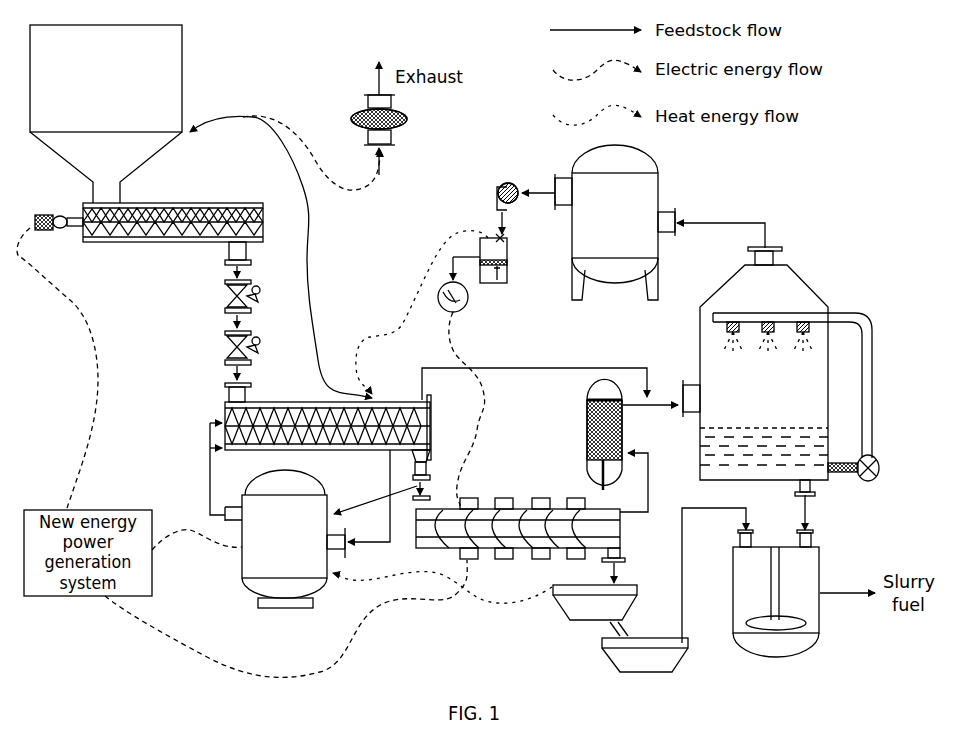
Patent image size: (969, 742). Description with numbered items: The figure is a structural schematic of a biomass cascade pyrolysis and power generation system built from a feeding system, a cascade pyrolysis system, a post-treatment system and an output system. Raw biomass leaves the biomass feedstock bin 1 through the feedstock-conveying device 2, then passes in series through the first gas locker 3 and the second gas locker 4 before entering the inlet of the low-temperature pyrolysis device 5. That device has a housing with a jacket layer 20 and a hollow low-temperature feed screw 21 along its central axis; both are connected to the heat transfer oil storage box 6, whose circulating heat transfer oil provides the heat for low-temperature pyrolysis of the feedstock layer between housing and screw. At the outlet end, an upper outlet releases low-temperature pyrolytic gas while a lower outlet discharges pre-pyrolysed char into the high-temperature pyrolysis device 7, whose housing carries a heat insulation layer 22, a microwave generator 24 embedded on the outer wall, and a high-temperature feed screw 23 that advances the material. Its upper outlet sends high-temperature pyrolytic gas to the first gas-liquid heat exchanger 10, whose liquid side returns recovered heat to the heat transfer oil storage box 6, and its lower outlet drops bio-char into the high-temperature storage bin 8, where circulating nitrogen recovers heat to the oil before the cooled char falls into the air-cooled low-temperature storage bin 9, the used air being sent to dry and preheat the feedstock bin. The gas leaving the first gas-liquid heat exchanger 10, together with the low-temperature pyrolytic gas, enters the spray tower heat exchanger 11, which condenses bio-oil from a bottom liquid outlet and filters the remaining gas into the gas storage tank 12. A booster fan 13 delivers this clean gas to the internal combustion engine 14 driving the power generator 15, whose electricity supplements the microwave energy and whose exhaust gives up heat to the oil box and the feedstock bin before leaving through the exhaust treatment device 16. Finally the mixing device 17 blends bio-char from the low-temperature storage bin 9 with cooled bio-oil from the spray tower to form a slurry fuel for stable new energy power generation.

The biomass feedstock bin 1 is at (162, 85).
The feedstock-conveying device 2 is at (182, 243).
The first gas locker 3 is at (230, 312).
The second gas locker 4 is at (223, 375).
The low-temperature pyrolysis device 5 is at (263, 403).
The heat transfer oil storage box 6 is at (315, 485).
The high-temperature pyrolysis device 7 is at (440, 553).
The high-temperature storage bin 8 is at (630, 580).
The low-temperature storage bin 9 is at (612, 652).
The first gas-liquid heat exchanger 10 is at (587, 417).
The spray tower heat exchanger 11 is at (807, 293).
The gas storage tank 12 is at (653, 192).
The booster fan 13 is at (505, 173).
The internal combustion engine 14 is at (510, 250).
The power generator 15 is at (468, 304).
The exhaust treatment device 16 is at (397, 132).
The mixing device 17 is at (812, 577).
The jacket layer 20 is at (247, 448).
The low-temperature feed screw 21 is at (222, 403).
The heat insulation layer 22 is at (513, 517).
The high-temperature feed screw 23 is at (628, 530).
The microwave generator 24 is at (533, 545).